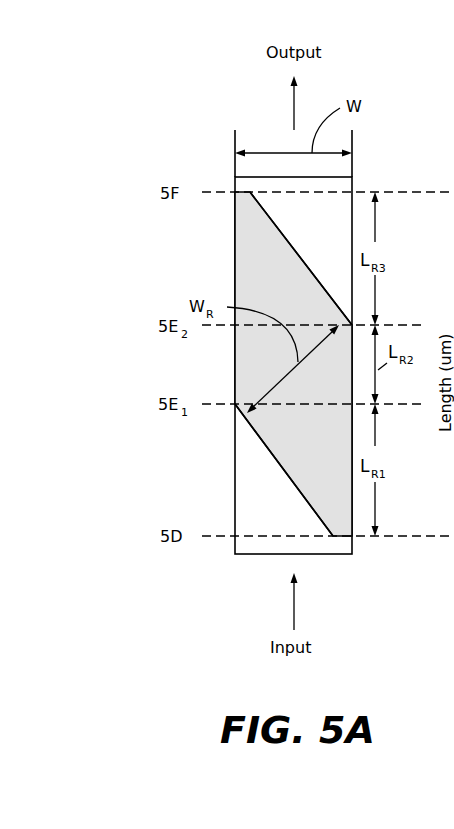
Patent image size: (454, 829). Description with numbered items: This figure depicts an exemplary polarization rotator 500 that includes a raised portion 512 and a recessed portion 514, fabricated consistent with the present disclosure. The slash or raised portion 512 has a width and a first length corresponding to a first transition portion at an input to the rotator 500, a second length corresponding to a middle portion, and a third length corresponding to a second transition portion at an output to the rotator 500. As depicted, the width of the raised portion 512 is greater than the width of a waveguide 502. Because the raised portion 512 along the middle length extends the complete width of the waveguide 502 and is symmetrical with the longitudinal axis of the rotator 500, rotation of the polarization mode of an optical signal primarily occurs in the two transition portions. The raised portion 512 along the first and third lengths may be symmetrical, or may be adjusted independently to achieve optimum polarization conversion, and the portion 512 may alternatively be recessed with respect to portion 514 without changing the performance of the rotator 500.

The polarization rotator 500 is at (142, 105).
The waveguide 502 is at (368, 188).
The raised portion 512 is at (284, 290).
The recessed portion 514 is at (329, 225).